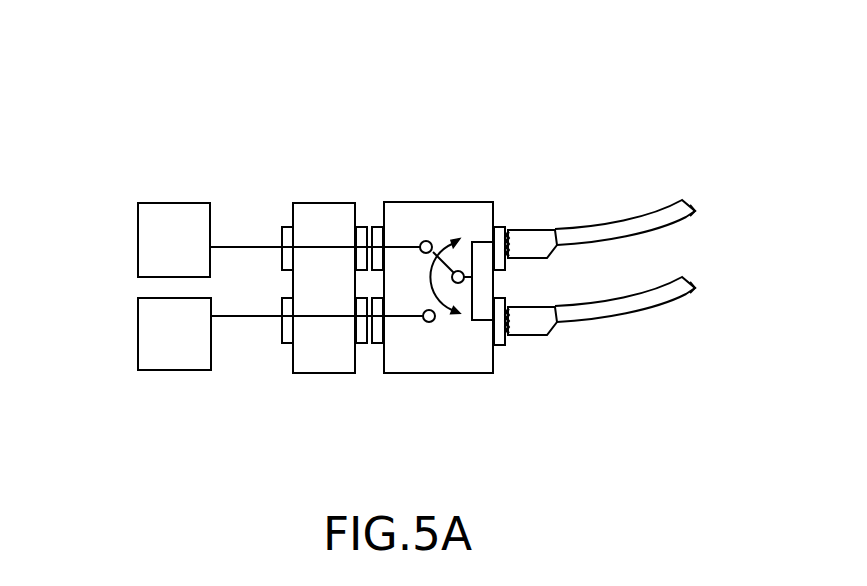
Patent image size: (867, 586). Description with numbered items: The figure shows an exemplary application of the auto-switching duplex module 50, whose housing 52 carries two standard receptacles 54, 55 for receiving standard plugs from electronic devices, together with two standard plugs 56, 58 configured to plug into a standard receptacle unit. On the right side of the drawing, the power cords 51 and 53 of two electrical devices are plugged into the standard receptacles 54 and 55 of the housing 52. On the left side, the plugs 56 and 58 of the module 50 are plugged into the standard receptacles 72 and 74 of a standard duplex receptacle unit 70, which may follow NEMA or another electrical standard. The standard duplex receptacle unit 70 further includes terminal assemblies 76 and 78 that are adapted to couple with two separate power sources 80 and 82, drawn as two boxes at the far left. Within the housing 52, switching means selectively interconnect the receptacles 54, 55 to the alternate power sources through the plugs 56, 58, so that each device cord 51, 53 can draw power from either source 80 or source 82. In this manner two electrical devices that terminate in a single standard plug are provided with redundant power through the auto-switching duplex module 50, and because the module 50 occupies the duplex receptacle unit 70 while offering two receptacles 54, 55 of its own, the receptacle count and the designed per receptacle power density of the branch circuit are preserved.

The auto-switching duplex module 50 is at (498, 108).
The power cord 51 is at (645, 218).
The housing 52 is at (472, 202).
The power cord 53 is at (658, 308).
The standard receptacle 54 is at (500, 227).
The standard receptacle 55 is at (500, 345).
The standard plug 56 is at (378, 227).
The standard plug 58 is at (378, 343).
The standard duplex receptacle unit 70 is at (325, 203).
The standard receptacle 72 is at (364, 227).
The standard receptacle 74 is at (362, 343).
The terminal assembly 76 is at (287, 343).
The terminal assembly 78 is at (283, 227).
The power source 80 is at (142, 203).
The power source 82 is at (160, 371).